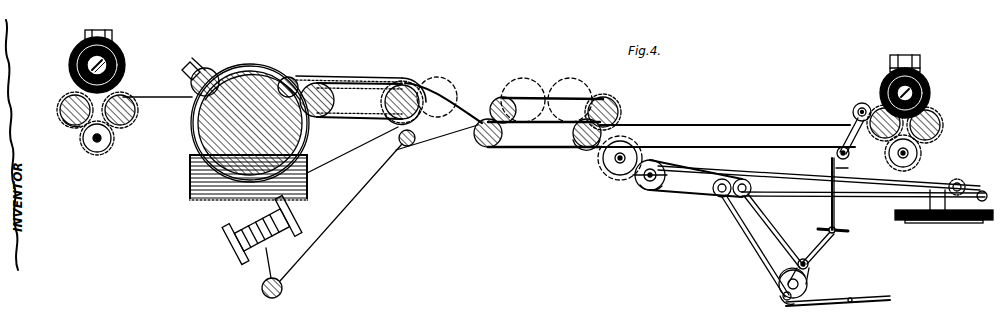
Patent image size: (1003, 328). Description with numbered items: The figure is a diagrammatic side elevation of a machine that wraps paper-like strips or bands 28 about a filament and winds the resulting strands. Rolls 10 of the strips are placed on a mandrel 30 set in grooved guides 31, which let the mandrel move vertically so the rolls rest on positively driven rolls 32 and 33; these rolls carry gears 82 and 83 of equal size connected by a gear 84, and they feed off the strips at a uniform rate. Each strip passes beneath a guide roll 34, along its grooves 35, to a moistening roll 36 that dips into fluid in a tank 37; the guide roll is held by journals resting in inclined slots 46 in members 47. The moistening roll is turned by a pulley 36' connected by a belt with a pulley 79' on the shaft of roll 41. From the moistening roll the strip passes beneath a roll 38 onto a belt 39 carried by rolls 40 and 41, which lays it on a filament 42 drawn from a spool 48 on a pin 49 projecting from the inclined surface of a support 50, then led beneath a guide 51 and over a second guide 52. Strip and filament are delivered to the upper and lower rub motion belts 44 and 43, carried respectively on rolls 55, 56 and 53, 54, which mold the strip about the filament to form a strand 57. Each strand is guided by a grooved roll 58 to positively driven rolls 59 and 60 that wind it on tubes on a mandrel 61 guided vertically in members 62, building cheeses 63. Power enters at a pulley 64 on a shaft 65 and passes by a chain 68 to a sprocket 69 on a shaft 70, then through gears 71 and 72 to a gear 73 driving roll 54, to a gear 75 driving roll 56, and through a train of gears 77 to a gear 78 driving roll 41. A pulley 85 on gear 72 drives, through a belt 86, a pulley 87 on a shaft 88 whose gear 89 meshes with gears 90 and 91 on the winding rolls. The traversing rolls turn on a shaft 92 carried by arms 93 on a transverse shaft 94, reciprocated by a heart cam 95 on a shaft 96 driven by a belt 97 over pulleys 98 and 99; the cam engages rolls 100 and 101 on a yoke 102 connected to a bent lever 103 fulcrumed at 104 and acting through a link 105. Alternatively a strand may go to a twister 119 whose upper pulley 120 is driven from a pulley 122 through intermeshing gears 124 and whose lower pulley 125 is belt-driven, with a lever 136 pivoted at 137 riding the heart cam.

The rolls 10 is at (78, 52).
The strips or bands 28 is at (181, 96).
The mandrel 30 is at (70, 127).
The grooved guides 31 is at (111, 30).
The positively driven roll 32 is at (65, 97).
The positively driven roll 33 is at (118, 126).
The guide roll 34 is at (222, 73).
The grooves 35 is at (211, 68).
The moistening roll 36 is at (228, 123).
The pulley 36' is at (230, 123).
The tank 37 is at (190, 190).
The roll 38 is at (288, 77).
The belt 39 is at (331, 120).
The roll 40 is at (318, 83).
The roll 41 is at (399, 85).
The filament 42 is at (436, 130).
The lower rub motion belt 43 is at (534, 148).
The upper rub motion belt 44 is at (540, 92).
The inclined slots 46 is at (188, 66).
The members 47 is at (200, 60).
The spool 48 is at (286, 224).
The pin 49 is at (285, 214).
The support 50 is at (238, 246).
The guide 51 is at (283, 289).
The second guide 52 is at (407, 147).
The roll 53 is at (487, 147).
The roll 54 is at (584, 147).
The roll 55 is at (501, 96).
The roll 56 is at (605, 97).
The strand 57 is at (694, 124).
The grooved roll 58 is at (854, 108).
The positively driven roll 59 is at (879, 108).
The positively driven roll 60 is at (942, 125).
The mandrel 61 is at (925, 85).
The members 62 is at (893, 62).
The cheeses 63 is at (918, 62).
The pulley 64 is at (723, 198).
The shaft 65 is at (745, 198).
The chain 68 is at (666, 196).
The sprocket 69 is at (652, 185).
The shaft 70 is at (668, 177).
The gear 71 is at (640, 183).
The gear 72 is at (606, 170).
The gear 73 is at (578, 148).
The gear 75 is at (620, 112).
The train of gears 77 is at (447, 78).
The gear 78 is at (389, 118).
The pulley 79' is at (361, 67).
The gear 82 is at (138, 112).
The gear 83 is at (58, 117).
The gear 84 is at (96, 153).
The pulley 85 is at (617, 165).
The belt 86 is at (698, 147).
The pulley 87 is at (918, 149).
The shaft 88 is at (910, 162).
The gear 89 is at (921, 158).
The gear 90 is at (868, 108).
The gear 91 is at (940, 113).
The shaft 92 is at (853, 112).
The arms 93 is at (849, 138).
The transverse shaft 94 is at (837, 154).
The heart cam 95 is at (790, 272).
The shaft 96 is at (782, 295).
The belt 97 is at (758, 245).
The pulley 98 is at (776, 194).
The pulley 99 is at (781, 280).
The roll 100 is at (781, 300).
The roll 101 is at (809, 264).
The yoke 102 is at (806, 276).
The bent lever 103 is at (825, 238).
The fulcrum 104 is at (838, 229).
The link 105 is at (848, 170).
The twister 119 is at (968, 227).
The upper pulley 120 is at (960, 183).
The pulley 122 is at (690, 193).
The intermeshing gears 124 is at (738, 166).
The lower pulley 125 is at (985, 196).
The lever 136 is at (892, 298).
The pivot 137 is at (857, 300).